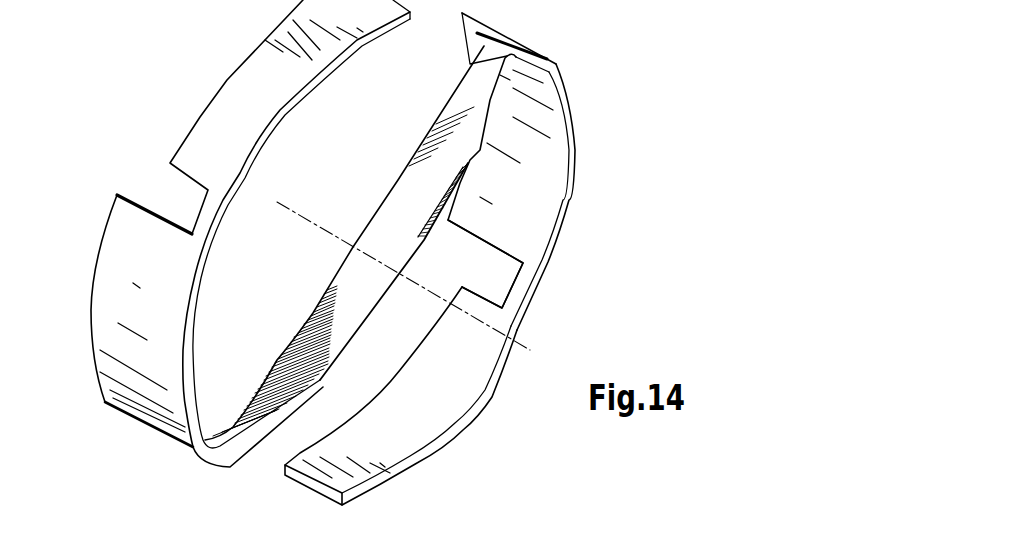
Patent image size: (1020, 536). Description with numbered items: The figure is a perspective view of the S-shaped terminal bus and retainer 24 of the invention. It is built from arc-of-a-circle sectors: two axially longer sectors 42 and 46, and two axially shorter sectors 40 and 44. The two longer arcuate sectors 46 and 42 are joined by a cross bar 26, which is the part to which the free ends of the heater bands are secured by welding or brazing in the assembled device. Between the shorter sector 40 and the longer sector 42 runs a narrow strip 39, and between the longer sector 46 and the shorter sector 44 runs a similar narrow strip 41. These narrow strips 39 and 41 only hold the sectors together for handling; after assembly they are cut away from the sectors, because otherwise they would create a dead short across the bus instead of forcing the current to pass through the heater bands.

The terminal bus and retainer 24 is at (580, 42).
The cross bar 26 is at (395, 213).
The narrow strip 39 is at (210, 212).
The axially shorter sector 40 is at (243, 100).
The narrow strip 41 is at (525, 285).
The axially longer sector 42 is at (132, 290).
The axially shorter sector 44 is at (430, 388).
The axially longer sector 46 is at (540, 188).